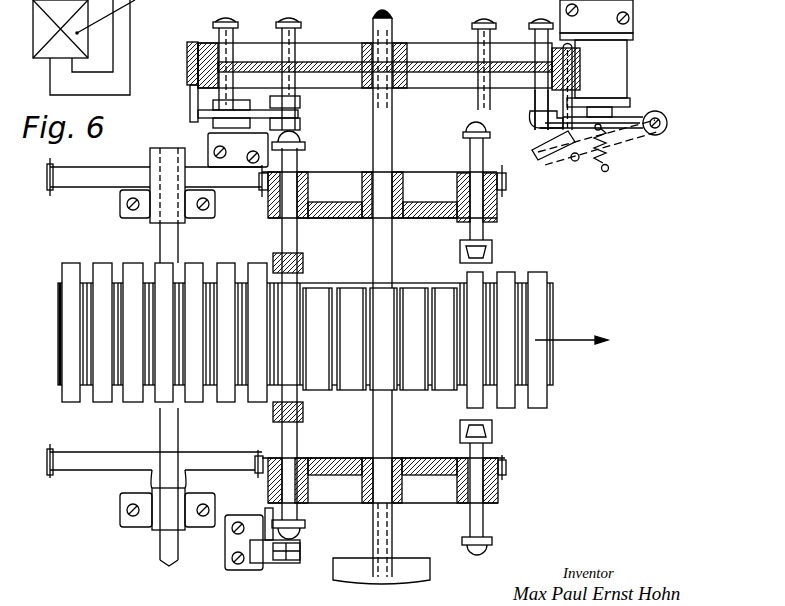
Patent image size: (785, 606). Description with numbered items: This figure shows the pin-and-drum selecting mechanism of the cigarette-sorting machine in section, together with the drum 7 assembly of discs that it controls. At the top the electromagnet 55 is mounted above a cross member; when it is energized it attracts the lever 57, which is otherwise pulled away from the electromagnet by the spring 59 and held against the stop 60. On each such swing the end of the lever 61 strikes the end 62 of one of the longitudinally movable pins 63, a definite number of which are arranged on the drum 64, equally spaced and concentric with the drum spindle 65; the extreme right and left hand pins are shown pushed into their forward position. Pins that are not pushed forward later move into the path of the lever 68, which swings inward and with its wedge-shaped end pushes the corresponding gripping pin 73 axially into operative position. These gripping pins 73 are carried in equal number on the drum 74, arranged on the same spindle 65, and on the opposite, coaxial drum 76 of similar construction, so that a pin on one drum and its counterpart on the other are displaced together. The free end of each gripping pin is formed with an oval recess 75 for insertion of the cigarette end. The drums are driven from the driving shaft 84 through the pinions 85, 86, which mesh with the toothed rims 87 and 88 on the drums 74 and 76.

The drum 7 is at (285, 385).
The electromagnet 55 is at (615, 85).
The lever 57 is at (558, 147).
The spring 59 is at (608, 171).
The stop 60 is at (575, 161).
The lever 61 is at (535, 118).
The end of pin 62 is at (542, 112).
The pins 63 is at (290, 37).
The drum 64 is at (423, 58).
The drum spindle 65 is at (380, 118).
The lever 68 is at (222, 113).
The gripping pins 73 is at (287, 157).
The drum 74 is at (430, 208).
The oval recess 75 is at (298, 265).
The drum 76 is at (430, 460).
The driving shaft 84 is at (168, 242).
The pinion 85 is at (95, 177).
The pinion 86 is at (98, 460).
The toothed rim 87 is at (505, 188).
The toothed rim 88 is at (506, 470).